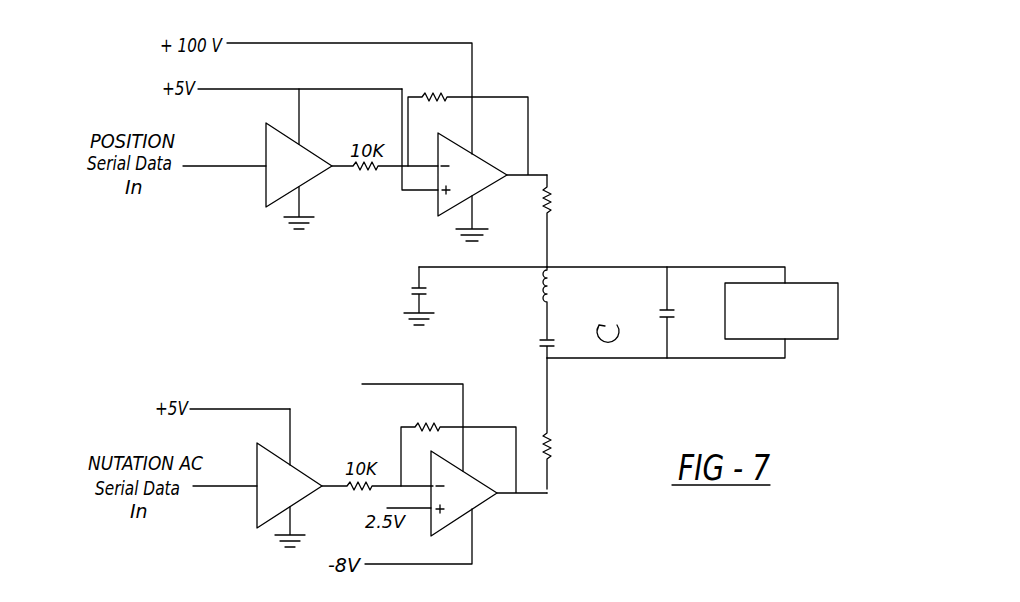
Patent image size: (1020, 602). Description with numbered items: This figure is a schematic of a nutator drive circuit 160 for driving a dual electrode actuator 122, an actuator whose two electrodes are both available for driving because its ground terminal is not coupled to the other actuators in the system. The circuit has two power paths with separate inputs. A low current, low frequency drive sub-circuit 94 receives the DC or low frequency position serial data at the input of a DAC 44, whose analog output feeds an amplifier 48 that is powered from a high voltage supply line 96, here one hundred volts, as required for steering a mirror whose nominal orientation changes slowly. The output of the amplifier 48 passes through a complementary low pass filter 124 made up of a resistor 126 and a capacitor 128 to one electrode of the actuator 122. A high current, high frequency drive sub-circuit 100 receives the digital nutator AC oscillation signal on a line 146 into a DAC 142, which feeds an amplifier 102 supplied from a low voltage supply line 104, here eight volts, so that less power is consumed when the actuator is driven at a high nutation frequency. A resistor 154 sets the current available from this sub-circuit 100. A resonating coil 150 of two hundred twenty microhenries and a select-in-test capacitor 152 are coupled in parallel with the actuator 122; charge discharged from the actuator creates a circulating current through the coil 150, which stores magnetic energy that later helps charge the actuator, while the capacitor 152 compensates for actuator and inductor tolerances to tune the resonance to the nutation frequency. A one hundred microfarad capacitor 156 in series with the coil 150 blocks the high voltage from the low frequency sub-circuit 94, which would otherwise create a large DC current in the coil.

The high voltage supply line 96 is at (340, 43).
The low current, low frequency drive sub-circuit 94 is at (578, 79).
The nutator drive circuit 160 is at (646, 109).
The resistor 126 is at (548, 187).
The complementary low pass filter 124 is at (628, 224).
The dual electrode actuator 122 is at (820, 283).
The DAC 44 is at (262, 193).
The amplifier 48 is at (437, 203).
The capacitor 128 is at (418, 295).
The resonating coil 150 is at (548, 303).
The capacitor 156 is at (545, 347).
The select-in-test capacitor 152 is at (665, 318).
The low voltage supply line 104 is at (385, 388).
The nutator AC oscillation signal line 146 is at (197, 488).
The DAC 142 is at (257, 515).
The amplifier 102 is at (480, 500).
The resistor 154 is at (550, 462).
The high current, high frequency drive sub-circuit 100 is at (559, 509).